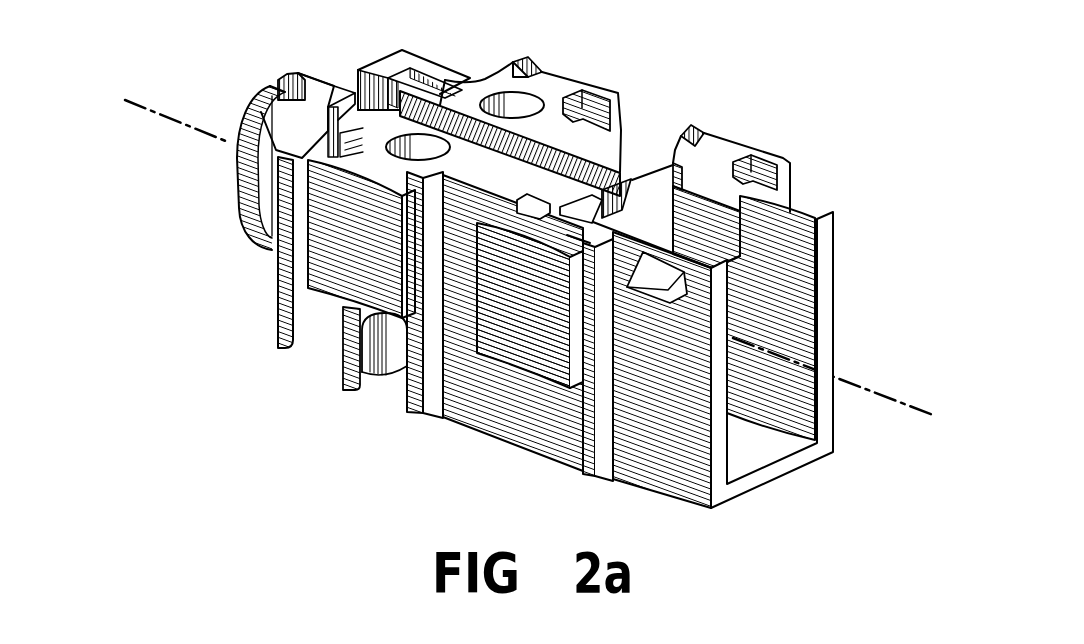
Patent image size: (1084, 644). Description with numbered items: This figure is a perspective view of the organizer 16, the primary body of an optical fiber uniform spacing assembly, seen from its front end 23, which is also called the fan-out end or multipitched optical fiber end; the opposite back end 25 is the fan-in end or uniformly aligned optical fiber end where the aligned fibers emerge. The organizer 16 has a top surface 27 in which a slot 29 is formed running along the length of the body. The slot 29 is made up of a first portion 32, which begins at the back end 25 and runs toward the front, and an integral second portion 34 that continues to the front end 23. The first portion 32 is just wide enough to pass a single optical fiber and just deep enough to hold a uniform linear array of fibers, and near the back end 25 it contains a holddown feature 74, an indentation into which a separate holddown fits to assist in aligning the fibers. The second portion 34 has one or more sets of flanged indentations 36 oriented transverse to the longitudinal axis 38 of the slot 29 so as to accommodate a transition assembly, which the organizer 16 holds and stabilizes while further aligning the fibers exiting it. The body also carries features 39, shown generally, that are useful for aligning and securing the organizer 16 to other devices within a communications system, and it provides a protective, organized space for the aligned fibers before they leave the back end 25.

The organizer 16 is at (697, 66).
The front end 23 is at (843, 297).
The back end 25 is at (272, 292).
The top surface 27 is at (395, 64).
The slot 29 is at (619, 177).
The first portion 32 is at (455, 110).
The second portion 34 is at (792, 230).
The flanged indentations 36 is at (687, 170).
The longitudinal axis 38 is at (193, 134).
The features 39 is at (523, 100).
The holddown feature 74 is at (347, 110).